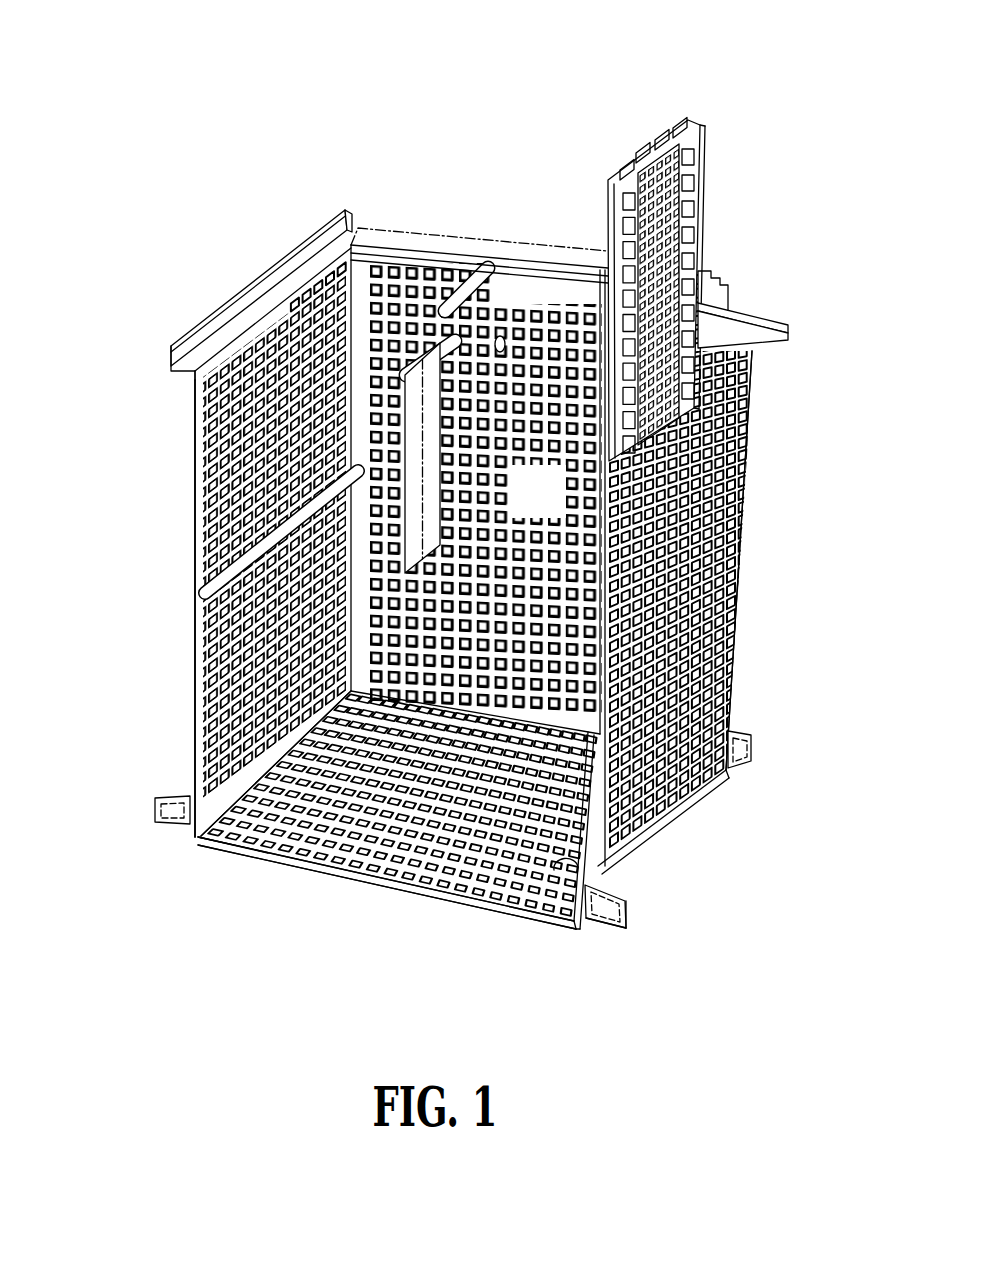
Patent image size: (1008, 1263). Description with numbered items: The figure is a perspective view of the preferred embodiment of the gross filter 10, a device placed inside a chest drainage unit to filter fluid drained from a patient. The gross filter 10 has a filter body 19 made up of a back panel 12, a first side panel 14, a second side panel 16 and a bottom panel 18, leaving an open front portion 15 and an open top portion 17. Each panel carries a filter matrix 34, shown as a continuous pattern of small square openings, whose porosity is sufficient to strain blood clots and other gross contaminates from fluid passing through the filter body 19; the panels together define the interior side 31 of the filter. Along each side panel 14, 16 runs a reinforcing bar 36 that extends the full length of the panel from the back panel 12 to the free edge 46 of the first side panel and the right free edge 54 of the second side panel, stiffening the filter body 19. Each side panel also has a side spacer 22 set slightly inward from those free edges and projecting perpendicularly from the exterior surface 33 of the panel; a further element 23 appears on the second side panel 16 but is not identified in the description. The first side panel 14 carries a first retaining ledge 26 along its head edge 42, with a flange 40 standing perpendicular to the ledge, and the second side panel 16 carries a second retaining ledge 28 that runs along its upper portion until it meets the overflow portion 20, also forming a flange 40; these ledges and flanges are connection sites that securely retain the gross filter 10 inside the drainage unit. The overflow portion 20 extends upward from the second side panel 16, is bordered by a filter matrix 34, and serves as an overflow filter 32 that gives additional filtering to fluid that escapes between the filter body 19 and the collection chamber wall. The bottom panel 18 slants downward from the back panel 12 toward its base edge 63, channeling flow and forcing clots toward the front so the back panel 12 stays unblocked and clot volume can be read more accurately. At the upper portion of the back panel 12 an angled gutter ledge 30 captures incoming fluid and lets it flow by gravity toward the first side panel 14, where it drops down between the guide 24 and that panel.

The gross filter 10 is at (484, 515).
The back panel 12 is at (397, 307).
The first side panel 14 is at (236, 338).
The open front portion 15 is at (273, 742).
The second side panel 16 is at (677, 504).
The open top portion 17 is at (492, 328).
The bottom panel 18 is at (323, 840).
The filter body 19 is at (165, 562).
The overflow portion 20 is at (660, 228).
The side spacer 22 is at (150, 816).
The rear foot 23 is at (732, 745).
The guide 24 is at (391, 310).
The first retaining ledge 26 is at (258, 285).
The second retaining ledge 28 is at (755, 313).
The gutter ledge 30 is at (460, 247).
The interior side 31 is at (245, 812).
The overflow filter 32 is at (700, 97).
The exterior surface 33 is at (758, 600).
The filter matrix 34 is at (697, 140).
The reinforcing bar 36 is at (197, 587).
The flange 40 is at (315, 202).
The head edge 42 is at (172, 352).
The free edge 46 is at (183, 446).
The right free edge 54 is at (592, 855).
The base edge 63 is at (460, 897).